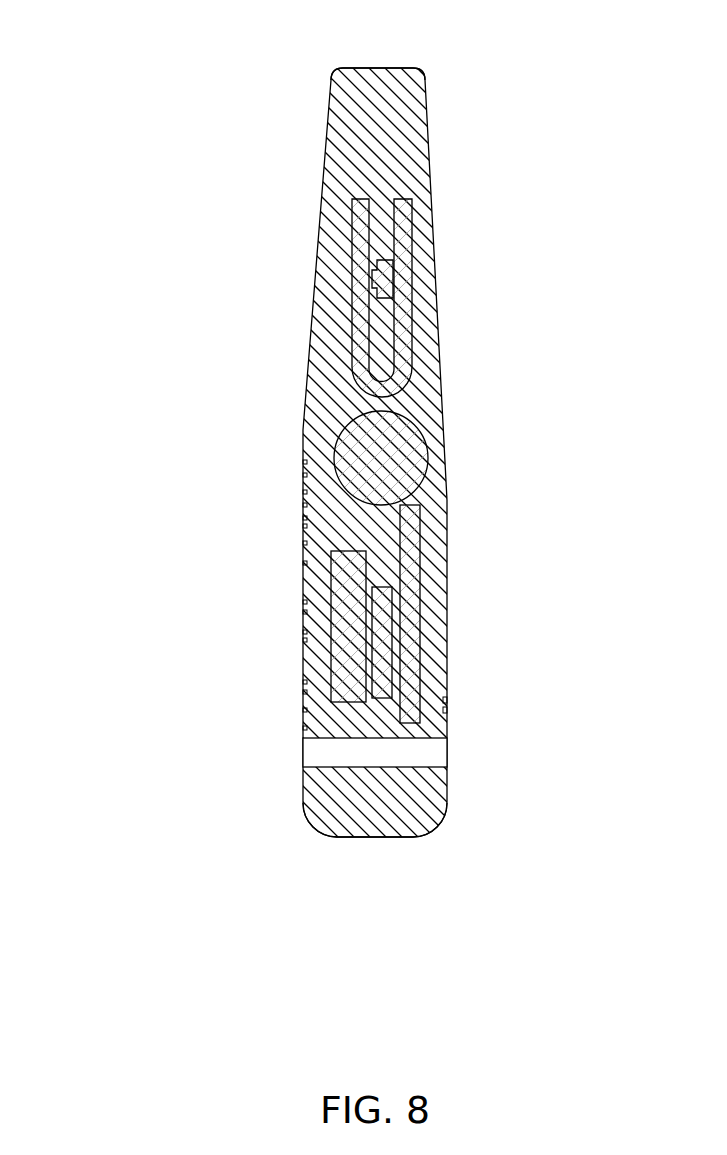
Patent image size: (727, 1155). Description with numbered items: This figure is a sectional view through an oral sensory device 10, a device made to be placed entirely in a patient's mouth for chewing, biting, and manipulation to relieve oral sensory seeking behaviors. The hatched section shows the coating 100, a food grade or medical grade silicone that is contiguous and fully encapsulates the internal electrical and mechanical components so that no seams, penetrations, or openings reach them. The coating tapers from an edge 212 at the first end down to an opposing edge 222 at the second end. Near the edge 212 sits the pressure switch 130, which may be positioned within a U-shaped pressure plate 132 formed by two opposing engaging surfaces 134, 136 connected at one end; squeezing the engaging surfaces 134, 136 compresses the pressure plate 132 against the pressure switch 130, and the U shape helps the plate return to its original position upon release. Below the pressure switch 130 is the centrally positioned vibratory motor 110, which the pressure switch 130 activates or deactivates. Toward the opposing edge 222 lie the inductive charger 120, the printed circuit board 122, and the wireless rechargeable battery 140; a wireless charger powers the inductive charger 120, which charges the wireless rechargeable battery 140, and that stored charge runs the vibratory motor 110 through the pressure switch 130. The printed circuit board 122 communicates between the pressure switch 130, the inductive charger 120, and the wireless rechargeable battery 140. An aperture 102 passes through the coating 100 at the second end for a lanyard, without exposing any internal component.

The oral sensory device 10 is at (143, 88).
The coating 100 is at (333, 290).
The aperture 102 is at (428, 752).
The vibratory motor 110 is at (405, 463).
The inductive charger 120 is at (343, 593).
The printed circuit board 122 is at (415, 557).
The pressure switch 130 is at (350, 323).
The U-shaped pressure plate 132 is at (402, 375).
The engaging surface 134 is at (357, 220).
The engaging surface 136 is at (405, 278).
The wireless rechargeable battery 140 is at (380, 683).
The edge 212 is at (352, 68).
The opposing edge 222 is at (328, 838).